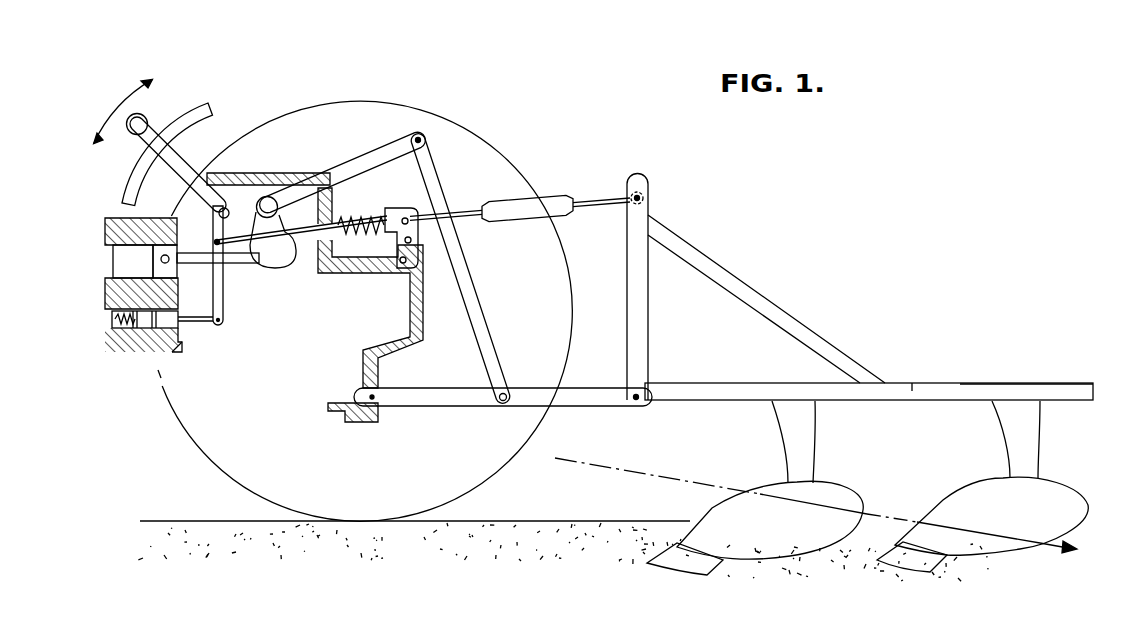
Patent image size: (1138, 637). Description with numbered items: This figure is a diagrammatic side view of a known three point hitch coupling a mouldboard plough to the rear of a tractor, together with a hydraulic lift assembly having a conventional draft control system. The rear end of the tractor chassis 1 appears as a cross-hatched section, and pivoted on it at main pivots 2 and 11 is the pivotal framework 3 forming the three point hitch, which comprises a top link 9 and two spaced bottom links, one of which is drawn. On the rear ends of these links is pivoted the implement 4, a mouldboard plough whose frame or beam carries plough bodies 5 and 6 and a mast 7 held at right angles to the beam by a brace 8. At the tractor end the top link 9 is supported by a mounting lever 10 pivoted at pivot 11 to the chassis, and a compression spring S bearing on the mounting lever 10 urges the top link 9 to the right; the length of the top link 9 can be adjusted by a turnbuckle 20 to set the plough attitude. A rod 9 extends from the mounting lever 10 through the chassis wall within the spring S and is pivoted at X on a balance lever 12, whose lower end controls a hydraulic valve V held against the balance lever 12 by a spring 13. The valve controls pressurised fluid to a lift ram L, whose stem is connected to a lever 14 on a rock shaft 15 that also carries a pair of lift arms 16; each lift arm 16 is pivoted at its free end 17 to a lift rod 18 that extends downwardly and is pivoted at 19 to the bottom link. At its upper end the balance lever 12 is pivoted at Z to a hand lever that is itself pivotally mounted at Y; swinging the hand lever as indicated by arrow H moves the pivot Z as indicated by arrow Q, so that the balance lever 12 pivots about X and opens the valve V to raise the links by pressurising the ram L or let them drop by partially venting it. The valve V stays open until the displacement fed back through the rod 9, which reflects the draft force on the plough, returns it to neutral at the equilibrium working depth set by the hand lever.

The tractor chassis 1 is at (247, 172).
The main pivot 2 is at (363, 397).
The pivotal framework 3 is at (609, 179).
The implement 4 is at (733, 360).
The plough body 5 is at (838, 497).
The plough body 6 is at (1063, 495).
The mast 7 is at (640, 322).
The brace 8 is at (818, 333).
The top link 9 is at (590, 177).
The mounting lever 10 is at (404, 208).
The main pivot 11 is at (397, 277).
The balance lever 12 is at (222, 292).
The spring 13 is at (110, 318).
The lever 14 is at (287, 263).
The rock shaft 15 is at (261, 264).
The lift arm 16 is at (383, 145).
The free end 17 is at (420, 140).
The lift rod 18 is at (487, 322).
The pivot 19 is at (492, 422).
The turnbuckle 20 is at (502, 198).
The arrow H is at (120, 98).
The arrow Q is at (212, 165).
The pivot Y is at (222, 191).
The pivot Z is at (200, 210).
The pivot X is at (108, 223).
The lift ram L is at (132, 260).
The compression spring S is at (362, 215).
The hydraulic valve V is at (187, 340).
The pivot C is at (644, 412).
The direction R is at (827, 511).